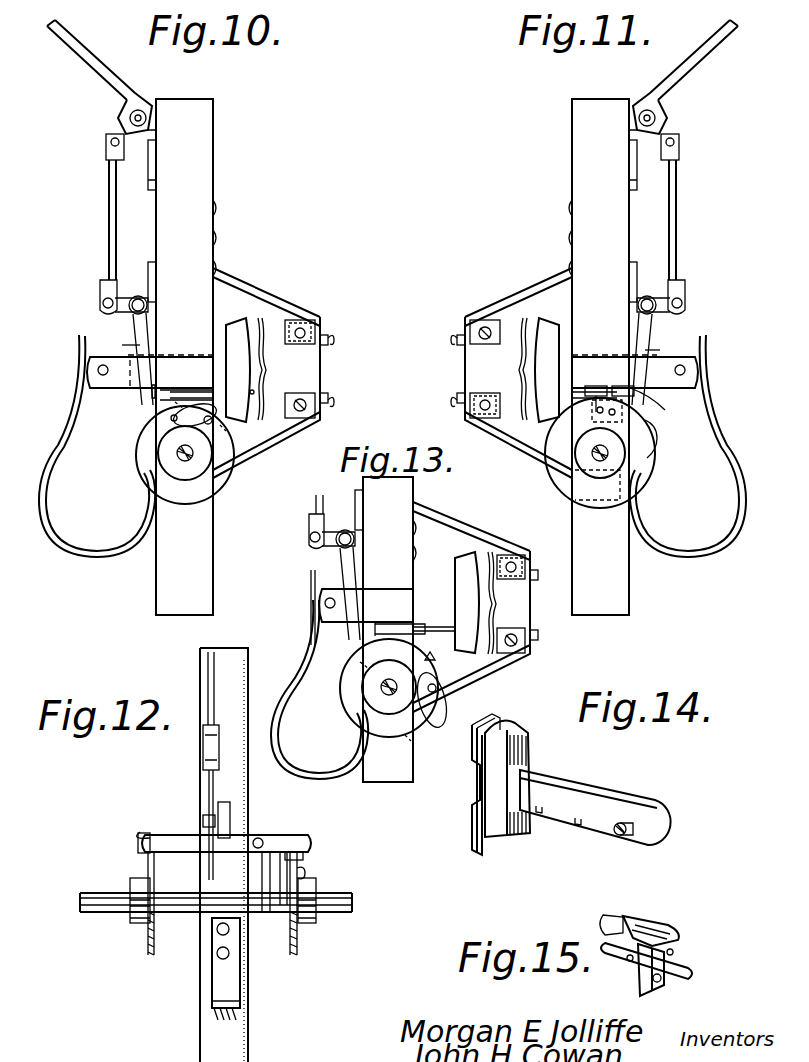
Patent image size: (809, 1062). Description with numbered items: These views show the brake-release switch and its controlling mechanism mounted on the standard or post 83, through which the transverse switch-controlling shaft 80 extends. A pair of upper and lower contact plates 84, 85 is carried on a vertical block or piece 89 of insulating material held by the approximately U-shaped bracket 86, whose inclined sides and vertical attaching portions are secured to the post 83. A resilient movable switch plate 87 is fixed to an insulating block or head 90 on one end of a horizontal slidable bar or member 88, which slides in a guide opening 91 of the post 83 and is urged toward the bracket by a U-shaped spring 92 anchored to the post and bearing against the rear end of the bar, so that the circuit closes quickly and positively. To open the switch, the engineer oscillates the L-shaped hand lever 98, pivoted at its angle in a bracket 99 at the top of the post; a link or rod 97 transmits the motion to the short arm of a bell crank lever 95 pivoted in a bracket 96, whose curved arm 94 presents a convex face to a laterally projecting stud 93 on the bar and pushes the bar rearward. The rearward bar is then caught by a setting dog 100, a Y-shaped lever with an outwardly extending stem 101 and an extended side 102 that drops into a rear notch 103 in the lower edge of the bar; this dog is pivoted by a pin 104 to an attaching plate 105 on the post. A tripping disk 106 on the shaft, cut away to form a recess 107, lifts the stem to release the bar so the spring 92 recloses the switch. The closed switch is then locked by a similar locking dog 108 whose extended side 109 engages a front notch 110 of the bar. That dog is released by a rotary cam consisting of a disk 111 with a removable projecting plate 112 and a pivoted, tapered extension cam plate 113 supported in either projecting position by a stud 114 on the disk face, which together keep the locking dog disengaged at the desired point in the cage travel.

In FIG. 10, the switch-controlling shaft 80 is at (183, 462).
In FIG. 11, the switch-controlling shaft 80 is at (598, 455).
In FIG. 13, the switch-controlling shaft 80 is at (386, 694).
In FIG. 12, the switch-controlling shaft 80 is at (92, 914).
In FIG. 10, the standard or post 83 is at (182, 357).
In FIG. 11, the standard or post 83 is at (635, 578).
In FIG. 13, the standard or post 83 is at (385, 629).
In FIG. 12, the standard or post 83 is at (250, 1030).
In FIG. 10, the upper contact plate 84 is at (296, 320).
In FIG. 11, the upper contact plate 84 is at (488, 320).
In FIG. 13, the upper contact plate 84 is at (516, 555).
In FIG. 10, the lower contact plate 85 is at (300, 430).
In FIG. 11, the lower contact plate 85 is at (496, 410).
In FIG. 13, the lower contact plate 85 is at (511, 640).
In FIG. 10, the bracket 86 is at (255, 277).
In FIG. 11, the bracket 86 is at (546, 298).
In FIG. 13, the bracket 86 is at (462, 510).
In FIG. 10, the movable switch plate 87 is at (257, 335).
In FIG. 11, the movable switch plate 87 is at (540, 335).
In FIG. 13, the movable switch plate 87 is at (486, 556).
In FIG. 14, the movable switch plate 87 is at (500, 725).
In FIG. 10, the slidable bar or member 88 is at (118, 390).
In FIG. 11, the slidable bar or member 88 is at (702, 383).
In FIG. 13, the slidable bar or member 88 is at (322, 615).
In FIG. 12, the slidable bar or member 88 is at (262, 832).
In FIG. 14, the slidable bar or member 88 is at (585, 802).
In FIG. 10, the vertical block or piece 89 is at (307, 363).
In FIG. 11, the vertical block or piece 89 is at (478, 357).
In FIG. 13, the vertical block or piece 89 is at (512, 585).
In FIG. 10, the block or head 90 is at (240, 365).
In FIG. 11, the block or head 90 is at (540, 370).
In FIG. 13, the block or head 90 is at (462, 600).
In FIG. 14, the block or head 90 is at (497, 788).
In FIG. 10, the guide opening 91 is at (175, 358).
In FIG. 12, the guide opening 91 is at (232, 816).
In FIG. 10, the spring 92 is at (42, 535).
In FIG. 11, the spring 92 is at (722, 435).
In FIG. 13, the spring 92 is at (319, 689).
In FIG. 12, the spring 92 is at (240, 985).
In FIG. 10, the stud 93 is at (100, 374).
In FIG. 11, the stud 93 is at (688, 370).
In FIG. 13, the stud 93 is at (326, 604).
In FIG. 12, the stud 93 is at (203, 822).
In FIG. 14, the stud 93 is at (636, 820).
In FIG. 10, the curved arm 94 is at (113, 342).
In FIG. 11, the curved arm 94 is at (650, 356).
In FIG. 13, the curved arm 94 is at (338, 585).
In FIG. 12, the curved arm 94 is at (210, 790).
In FIG. 10, the bell crank lever 95 is at (120, 318).
In FIG. 11, the bell crank lever 95 is at (680, 318).
In FIG. 13, the bell crank lever 95 is at (345, 550).
In FIG. 10, the bracket 96 is at (150, 318).
In FIG. 11, the bracket 96 is at (638, 296).
In FIG. 13, the bracket 96 is at (348, 585).
In FIG. 10, the link or rod 97 is at (111, 208).
In FIG. 11, the link or rod 97 is at (677, 212).
In FIG. 13, the link or rod 97 is at (312, 506).
In FIG. 12, the link or rod 97 is at (213, 706).
In FIG. 10, the L-shaped hand lever 98 is at (112, 95).
In FIG. 11, the L-shaped hand lever 98 is at (672, 88).
In FIG. 10, the bracket 99 is at (148, 120).
In FIG. 11, the bracket 99 is at (636, 120).
In FIG. 11, the setting dog 100 is at (586, 421).
In FIG. 12, the setting dog 100 is at (150, 838).
In FIG. 15, the setting dog 100 is at (657, 925).
In FIG. 11, the stem 101 is at (603, 386).
In FIG. 12, the stem 101 is at (140, 842).
In FIG. 15, the stem 101 is at (610, 920).
In FIG. 10, the extended side or arm 102 is at (150, 425).
In FIG. 11, the extended side or arm 102 is at (648, 396).
In FIG. 12, the extended side or arm 102 is at (224, 893).
In FIG. 15, the extended side or arm 102 is at (700, 970).
In FIG. 14, the rear notch 103 is at (578, 838).
In FIG. 15, the pin 104 is at (628, 962).
In FIG. 12, the attaching plate 105 is at (195, 900).
In FIG. 15, the attaching plate 105 is at (690, 988).
In FIG. 11, the tripping disk 106 is at (605, 495).
In FIG. 12, the tripping disk 106 is at (152, 945).
In FIG. 11, the recess 107 is at (653, 436).
In FIG. 12, the recess 107 is at (147, 866).
In FIG. 10, the locking dog 108 is at (180, 373).
In FIG. 13, the locking dog 108 is at (388, 616).
In FIG. 12, the locking dog 108 is at (267, 896).
In FIG. 10, the extended side or arm 109 is at (198, 350).
In FIG. 11, the extended side or arm 109 is at (575, 353).
In FIG. 13, the extended side or arm 109 is at (422, 636).
In FIG. 13, the front notch 110 is at (415, 600).
In FIG. 14, the front notch 110 is at (539, 828).
In FIG. 10, the disk 111 is at (155, 463).
In FIG. 13, the disk 111 is at (352, 708).
In FIG. 12, the disk 111 is at (300, 943).
In FIG. 10, the projecting plate 112 is at (274, 386).
In FIG. 13, the projecting plate 112 is at (445, 680).
In FIG. 12, the projecting plate 112 is at (284, 906).
In FIG. 10, the extension cam plate 113 is at (180, 425).
In FIG. 13, the extension cam plate 113 is at (430, 722).
In FIG. 12, the extension cam plate 113 is at (305, 858).
In FIG. 10, the stud 114 is at (175, 415).
In FIG. 13, the stud 114 is at (360, 665).
In FIG. 12, the stud 114 is at (308, 880).